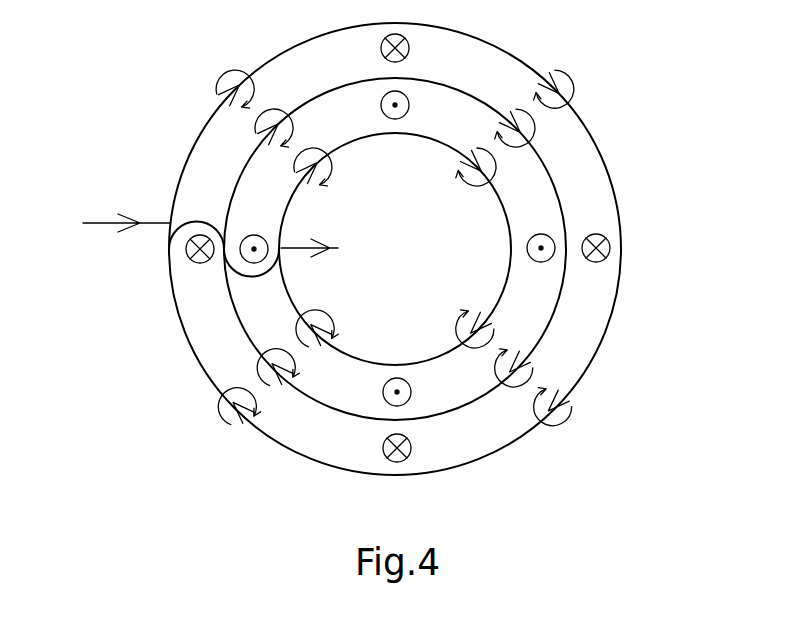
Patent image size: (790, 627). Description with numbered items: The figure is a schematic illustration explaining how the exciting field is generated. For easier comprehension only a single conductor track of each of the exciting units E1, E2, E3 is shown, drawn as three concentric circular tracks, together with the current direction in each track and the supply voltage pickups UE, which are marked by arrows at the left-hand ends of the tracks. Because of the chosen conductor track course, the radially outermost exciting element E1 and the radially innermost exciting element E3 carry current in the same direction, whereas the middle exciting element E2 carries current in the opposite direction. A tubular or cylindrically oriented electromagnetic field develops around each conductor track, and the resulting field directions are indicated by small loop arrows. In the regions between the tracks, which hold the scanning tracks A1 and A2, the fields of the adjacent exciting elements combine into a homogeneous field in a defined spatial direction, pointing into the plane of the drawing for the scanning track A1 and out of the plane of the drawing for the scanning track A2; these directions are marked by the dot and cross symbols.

The radially outermost exciting element E1 is at (187, 338).
The middle exciting element E2 is at (323, 405).
The radially innermost exciting element E3 is at (503, 208).
The scanning track A1 is at (533, 305).
The scanning track A2 is at (577, 347).
The supply voltage pickups UE is at (208, 235).